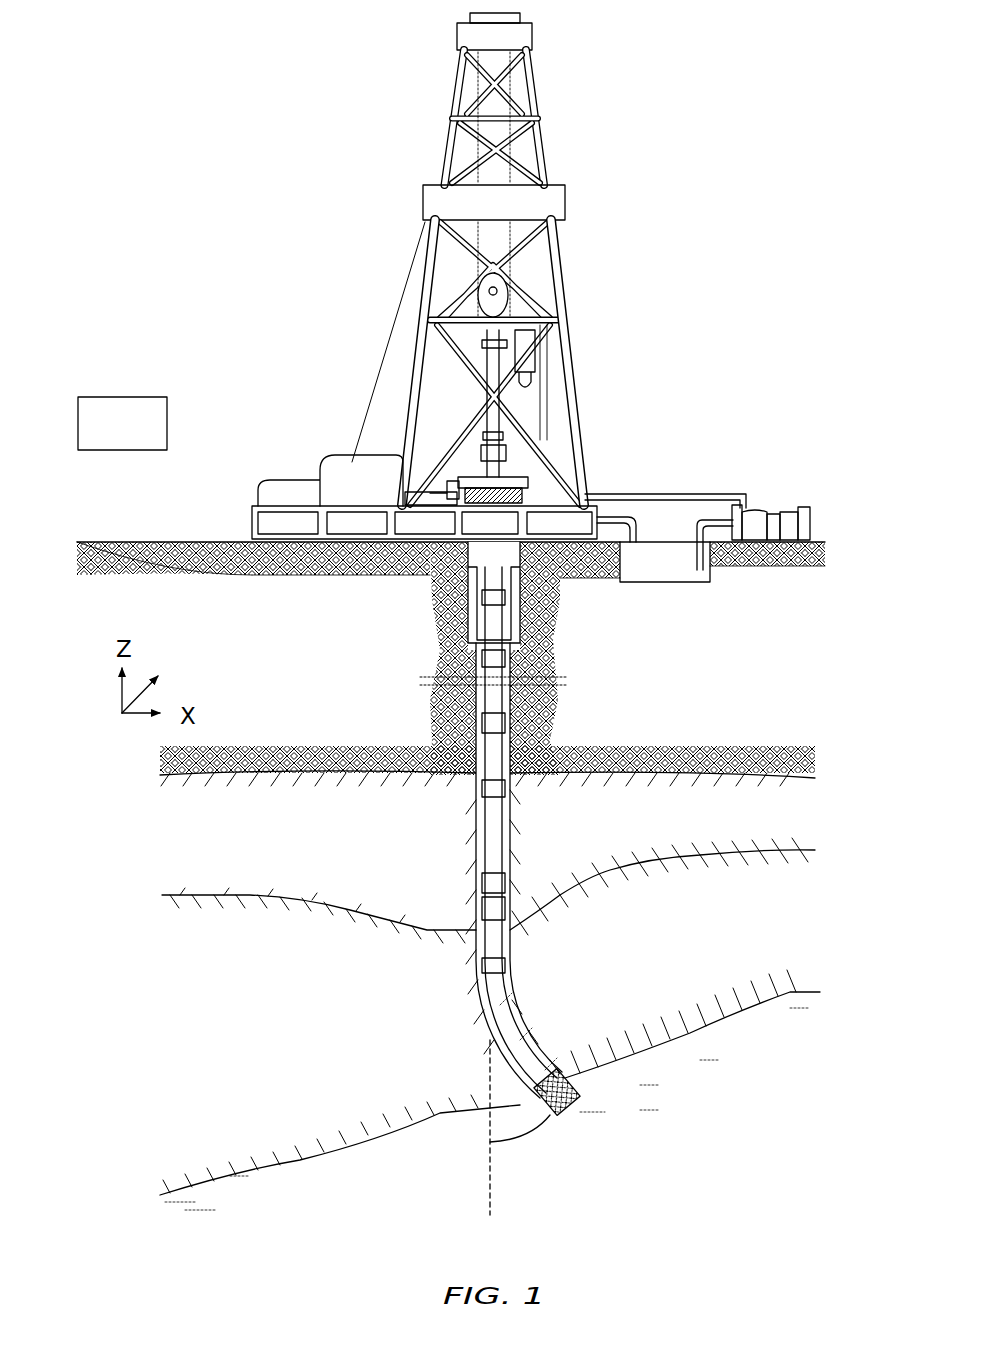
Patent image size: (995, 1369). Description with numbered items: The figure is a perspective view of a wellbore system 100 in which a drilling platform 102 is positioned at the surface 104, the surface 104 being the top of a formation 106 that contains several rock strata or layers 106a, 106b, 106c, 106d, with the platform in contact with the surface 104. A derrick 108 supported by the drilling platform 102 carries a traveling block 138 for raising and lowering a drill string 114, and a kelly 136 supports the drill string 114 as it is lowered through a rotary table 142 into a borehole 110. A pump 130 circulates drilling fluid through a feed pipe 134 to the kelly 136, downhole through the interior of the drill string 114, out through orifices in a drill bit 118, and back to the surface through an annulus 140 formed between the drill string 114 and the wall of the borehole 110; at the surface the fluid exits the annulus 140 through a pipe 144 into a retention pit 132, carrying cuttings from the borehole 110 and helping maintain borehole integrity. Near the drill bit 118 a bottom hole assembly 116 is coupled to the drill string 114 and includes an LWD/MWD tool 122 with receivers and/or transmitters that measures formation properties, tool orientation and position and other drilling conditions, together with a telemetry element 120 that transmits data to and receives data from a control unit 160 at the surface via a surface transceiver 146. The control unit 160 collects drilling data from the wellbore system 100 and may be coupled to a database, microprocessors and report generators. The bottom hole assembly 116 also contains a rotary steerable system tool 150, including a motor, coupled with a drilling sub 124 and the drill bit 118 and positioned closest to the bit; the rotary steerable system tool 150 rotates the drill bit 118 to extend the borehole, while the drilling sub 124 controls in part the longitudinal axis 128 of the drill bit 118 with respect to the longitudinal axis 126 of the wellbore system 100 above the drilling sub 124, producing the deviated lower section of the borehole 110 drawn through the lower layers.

The wellbore system 100 is at (310, 85).
The drilling platform 102 is at (250, 520).
The surface 104 is at (112, 542).
The formation 106 is at (162, 574).
The rock stratum or layer 106a is at (487, 711).
The rock stratum or layer 106b is at (488, 880).
The rock stratum or layer 106c is at (490, 1090).
The rock stratum or layer 106d is at (321, 1208).
The derrick 108 is at (548, 158).
The borehole 110 is at (560, 685).
The drill string 114 is at (540, 645).
The bottom hole assembly 116 is at (470, 1018).
The drill bit 118 is at (578, 1100).
The telemetry element 120 is at (512, 872).
The LWD/MWD tool 122 is at (513, 905).
The drilling sub 124 is at (527, 1005).
The longitudinal axis of the wellbore system 126 is at (497, 1150).
The longitudinal axis of the drill bit 128 is at (605, 1162).
The pump 130 is at (760, 505).
The retention pit 132 is at (695, 585).
The feed pipe 134 is at (680, 497).
The kelly 136 is at (540, 356).
The traveling block 138 is at (530, 292).
The annulus 140 is at (355, 462).
The rotary table 142 is at (518, 477).
The pipe 144 is at (545, 597).
The surface transceiver 146 is at (510, 433).
The rotary steerable system tool 150 is at (520, 948).
The control unit 160 is at (122, 423).